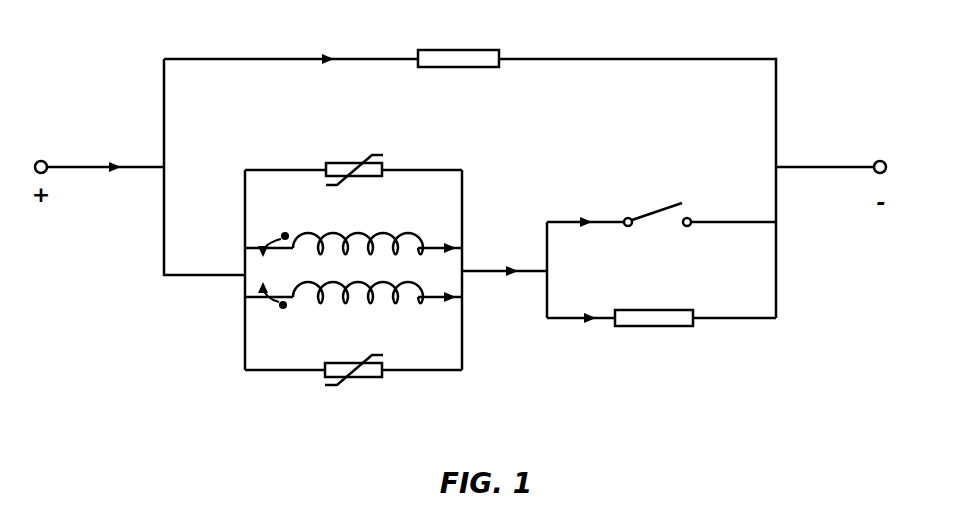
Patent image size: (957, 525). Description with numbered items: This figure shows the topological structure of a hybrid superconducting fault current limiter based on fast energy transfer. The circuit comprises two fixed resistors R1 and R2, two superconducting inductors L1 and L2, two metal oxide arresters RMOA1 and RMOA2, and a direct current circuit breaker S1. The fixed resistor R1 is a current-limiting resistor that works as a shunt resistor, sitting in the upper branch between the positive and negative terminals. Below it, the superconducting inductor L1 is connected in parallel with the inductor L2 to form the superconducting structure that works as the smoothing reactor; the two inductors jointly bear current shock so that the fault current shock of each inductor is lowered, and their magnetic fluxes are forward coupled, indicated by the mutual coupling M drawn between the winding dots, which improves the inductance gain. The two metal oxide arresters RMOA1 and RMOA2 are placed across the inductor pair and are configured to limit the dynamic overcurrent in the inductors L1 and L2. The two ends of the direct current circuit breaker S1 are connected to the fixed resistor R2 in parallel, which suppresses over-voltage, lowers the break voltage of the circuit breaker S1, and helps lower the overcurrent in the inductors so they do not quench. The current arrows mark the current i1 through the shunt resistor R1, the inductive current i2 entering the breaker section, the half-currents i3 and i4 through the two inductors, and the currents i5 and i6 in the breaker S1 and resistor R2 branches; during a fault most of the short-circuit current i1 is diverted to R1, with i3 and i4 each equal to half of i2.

The fixed resistor R1 is at (458, 39).
The fixed resistor R2 is at (654, 342).
The metal oxide arrester RMOA1 is at (349, 154).
The metal oxide arrester RMOA2 is at (349, 390).
The superconducting inductor L1 is at (353, 228).
The superconducting inductor L2 is at (353, 314).
The mutual inductance between coils M is at (265, 270).
The direct current circuit breaker S1 is at (657, 199).
The short-circuit current i1 is at (326, 74).
The inductive current i2 is at (505, 294).
The inductor current i3 is at (442, 233).
The inductor current i4 is at (442, 319).
The current through S1 i5 is at (582, 239).
The current through R2 i6 is at (586, 336).